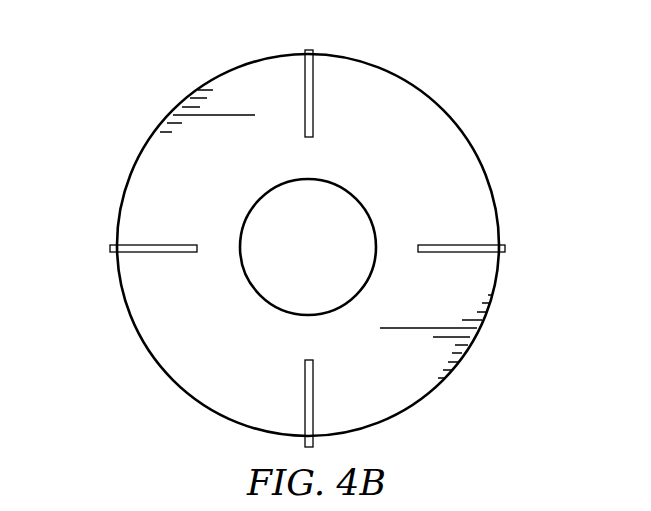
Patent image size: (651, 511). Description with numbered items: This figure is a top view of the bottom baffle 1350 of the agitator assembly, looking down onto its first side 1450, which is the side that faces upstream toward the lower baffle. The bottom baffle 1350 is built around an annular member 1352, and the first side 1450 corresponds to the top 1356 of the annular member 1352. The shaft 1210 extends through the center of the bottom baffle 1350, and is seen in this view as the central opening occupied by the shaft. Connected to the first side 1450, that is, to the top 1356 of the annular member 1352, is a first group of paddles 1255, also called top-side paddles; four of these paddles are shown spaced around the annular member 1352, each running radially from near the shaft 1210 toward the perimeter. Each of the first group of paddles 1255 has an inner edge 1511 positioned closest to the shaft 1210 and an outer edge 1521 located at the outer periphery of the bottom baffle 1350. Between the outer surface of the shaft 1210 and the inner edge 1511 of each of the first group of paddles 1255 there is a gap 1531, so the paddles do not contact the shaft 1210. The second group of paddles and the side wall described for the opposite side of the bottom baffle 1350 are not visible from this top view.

The bottom baffle 1350 is at (118, 100).
The first side 1450 is at (420, 118).
The top of the annular member 1356 is at (358, 85).
The annular member 1352 is at (168, 355).
The shaft 1210 is at (262, 227).
The first group of paddles 1255 is at (304, 88).
The outer edge 1521 is at (305, 50).
The inner edge 1511 is at (310, 137).
The gap 1531 is at (398, 266).